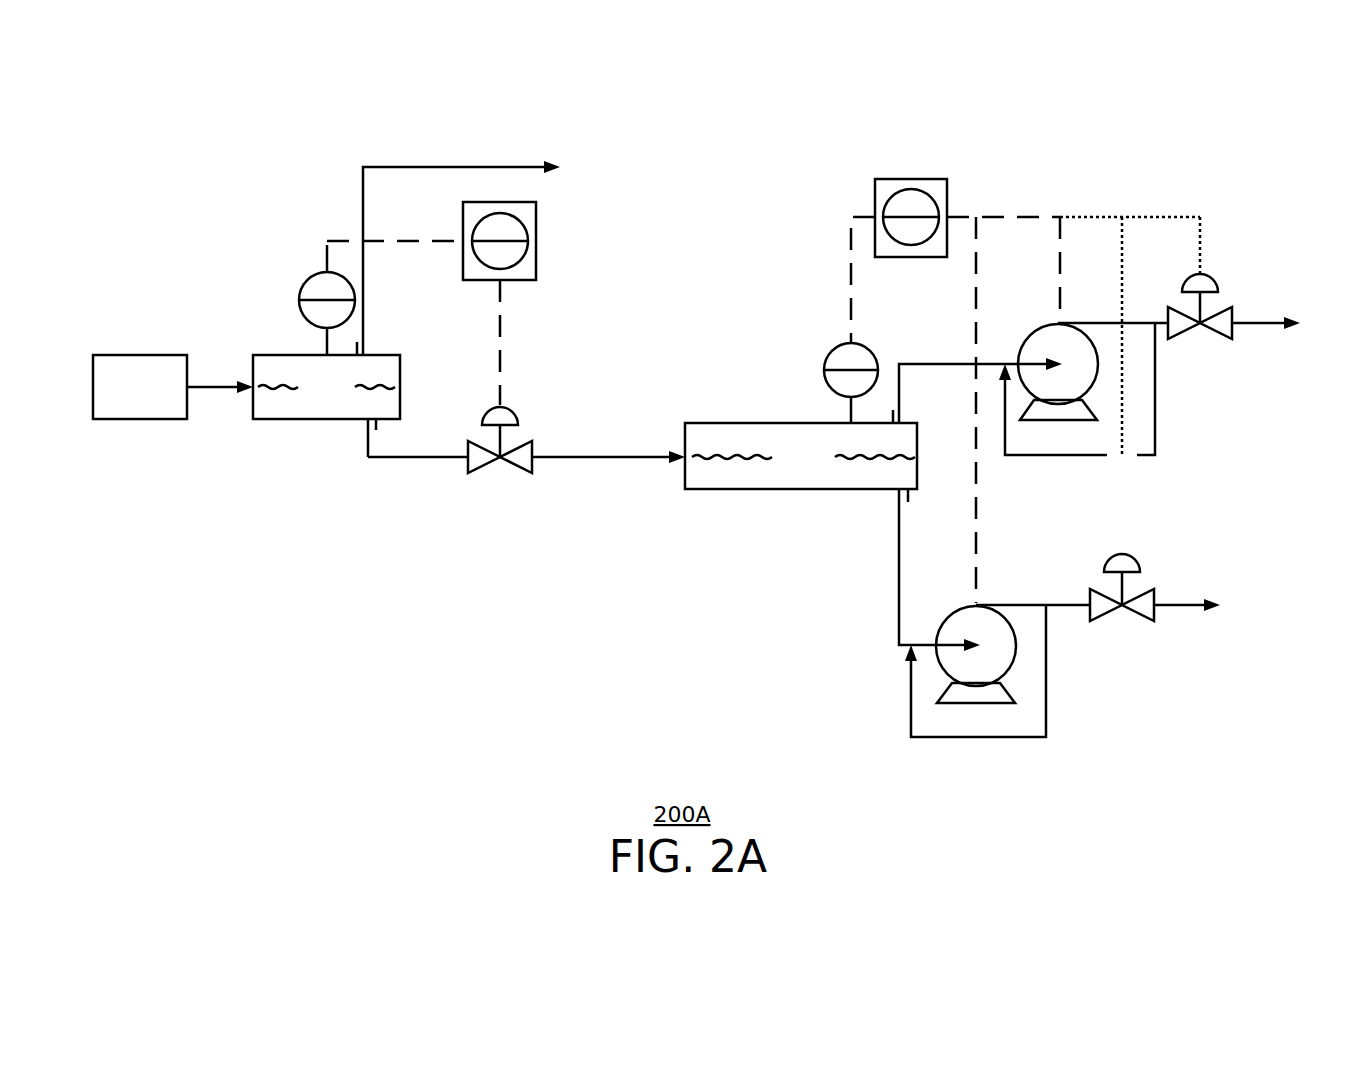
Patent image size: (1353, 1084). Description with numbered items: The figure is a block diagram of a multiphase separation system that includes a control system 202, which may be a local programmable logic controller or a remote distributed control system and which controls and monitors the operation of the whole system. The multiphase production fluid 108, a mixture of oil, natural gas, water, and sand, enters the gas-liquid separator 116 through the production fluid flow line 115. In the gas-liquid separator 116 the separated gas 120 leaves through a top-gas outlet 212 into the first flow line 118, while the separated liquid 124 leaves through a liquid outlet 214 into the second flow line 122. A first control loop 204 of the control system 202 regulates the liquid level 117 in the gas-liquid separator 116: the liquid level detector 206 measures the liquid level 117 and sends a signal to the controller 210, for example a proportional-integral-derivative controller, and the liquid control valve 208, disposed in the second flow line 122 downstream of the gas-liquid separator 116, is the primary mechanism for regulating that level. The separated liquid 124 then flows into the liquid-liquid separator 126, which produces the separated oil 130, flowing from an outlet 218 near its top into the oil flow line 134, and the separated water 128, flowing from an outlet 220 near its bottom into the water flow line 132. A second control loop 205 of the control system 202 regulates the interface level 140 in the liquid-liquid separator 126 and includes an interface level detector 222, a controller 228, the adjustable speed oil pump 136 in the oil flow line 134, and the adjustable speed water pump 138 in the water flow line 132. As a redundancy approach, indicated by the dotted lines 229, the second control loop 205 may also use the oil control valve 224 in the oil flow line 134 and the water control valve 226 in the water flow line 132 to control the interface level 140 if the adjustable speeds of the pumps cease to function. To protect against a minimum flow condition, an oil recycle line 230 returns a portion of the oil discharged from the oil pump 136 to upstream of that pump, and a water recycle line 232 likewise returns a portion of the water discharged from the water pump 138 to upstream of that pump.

The multiphase production fluid 108 is at (140, 387).
The production fluid flow line 115 is at (215, 383).
The gas-liquid separator 116 is at (326, 387).
The liquid level 117 is at (252, 388).
The first flow line 118 is at (416, 166).
The separated gas 120 is at (401, 368).
The second flow line 122 is at (398, 460).
The separated liquid 124 is at (401, 402).
The liquid-liquid separator 126 is at (801, 456).
The separated water 128 is at (685, 470).
The separated oil 130 is at (685, 447).
The water flow line 132 is at (898, 572).
The oil flow line 134 is at (942, 363).
The oil pump 136 is at (1073, 420).
The water pump 138 is at (977, 705).
The interface level 140 is at (918, 455).
The control system 202 is at (303, 288).
The first control loop 204 is at (342, 240).
The second control loop 205 is at (1015, 217).
The liquid level detector 206 is at (327, 300).
The liquid control valve 208 is at (520, 472).
The controller 210 is at (499, 303).
The top-gas outlet 212 is at (370, 347).
The liquid outlet 214 is at (362, 423).
The outlet 218 is at (903, 417).
The outlet 220 is at (893, 494).
The interface level detector 222 is at (851, 383).
The oil control valve 224 is at (1218, 335).
The water control valve 226 is at (1130, 617).
The controller 228 is at (899, 261).
The dotted lines 229 is at (1123, 260).
The oil recycle line 230 is at (1155, 420).
The water recycle line 232 is at (1046, 705).